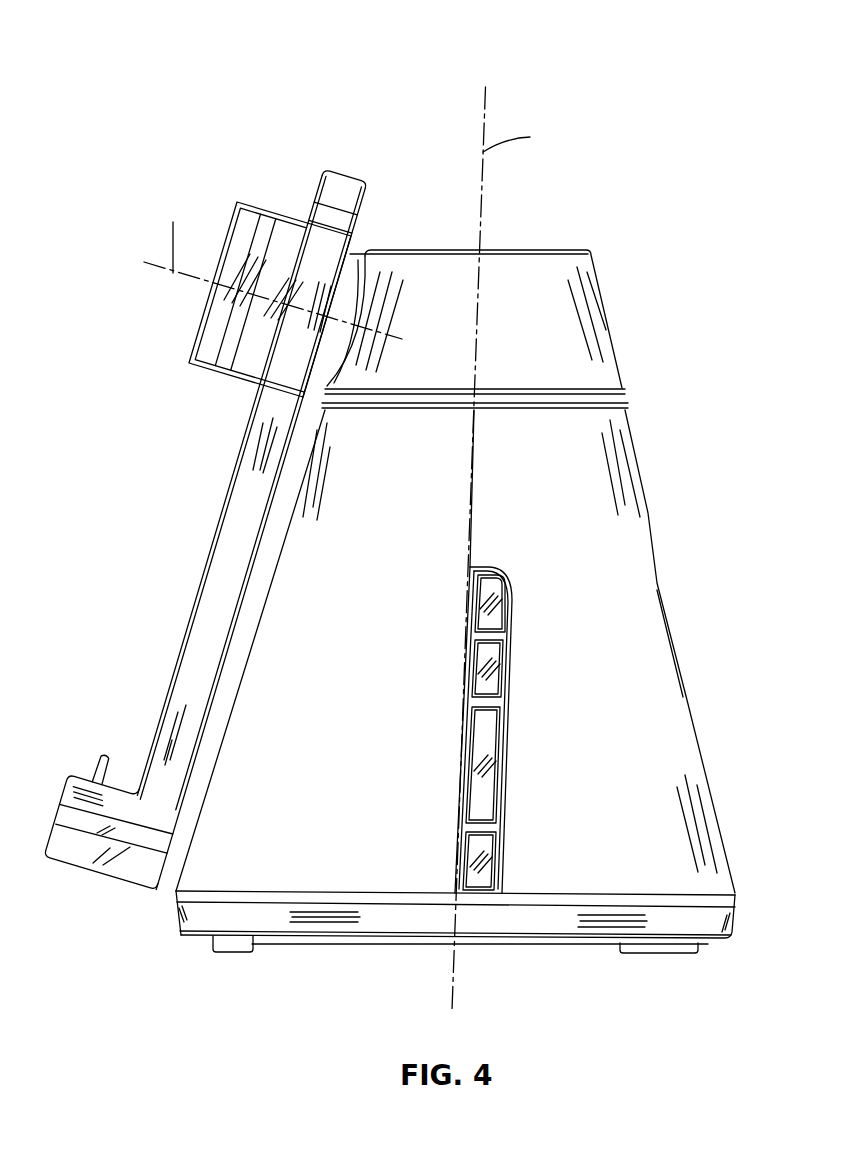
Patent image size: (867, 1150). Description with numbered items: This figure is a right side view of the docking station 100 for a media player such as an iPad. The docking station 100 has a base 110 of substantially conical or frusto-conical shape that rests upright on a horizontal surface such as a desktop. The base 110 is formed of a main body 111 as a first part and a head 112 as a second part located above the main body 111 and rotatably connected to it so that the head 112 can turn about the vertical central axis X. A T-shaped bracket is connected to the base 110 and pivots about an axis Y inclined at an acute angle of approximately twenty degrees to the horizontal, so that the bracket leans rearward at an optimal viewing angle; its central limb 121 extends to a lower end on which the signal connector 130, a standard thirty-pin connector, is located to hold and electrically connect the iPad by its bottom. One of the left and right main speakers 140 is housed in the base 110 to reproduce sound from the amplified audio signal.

The docking station 100 is at (228, 58).
The base 110 is at (720, 958).
The main body 111 is at (627, 505).
The head 112 is at (587, 333).
The central limb 121 is at (222, 535).
The signal connector 130 is at (103, 756).
The main speakers 140 is at (358, 873).